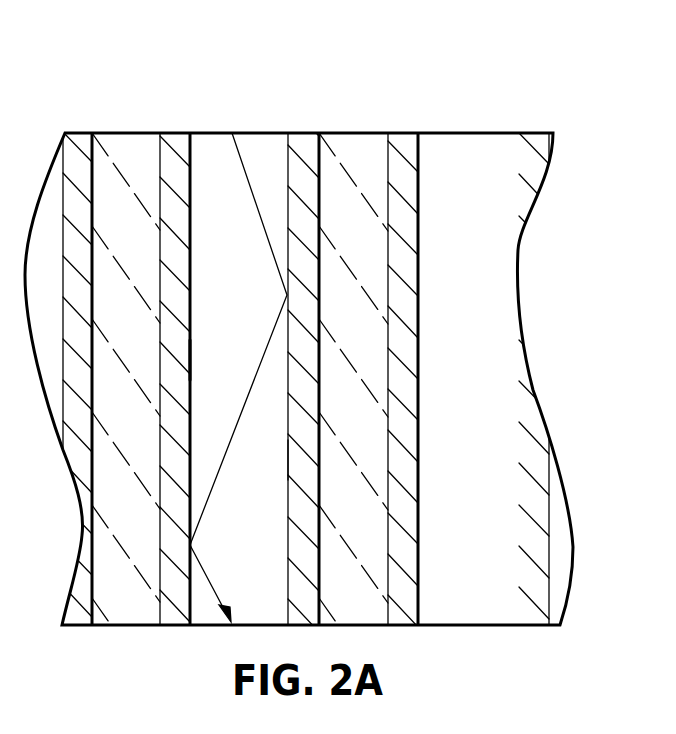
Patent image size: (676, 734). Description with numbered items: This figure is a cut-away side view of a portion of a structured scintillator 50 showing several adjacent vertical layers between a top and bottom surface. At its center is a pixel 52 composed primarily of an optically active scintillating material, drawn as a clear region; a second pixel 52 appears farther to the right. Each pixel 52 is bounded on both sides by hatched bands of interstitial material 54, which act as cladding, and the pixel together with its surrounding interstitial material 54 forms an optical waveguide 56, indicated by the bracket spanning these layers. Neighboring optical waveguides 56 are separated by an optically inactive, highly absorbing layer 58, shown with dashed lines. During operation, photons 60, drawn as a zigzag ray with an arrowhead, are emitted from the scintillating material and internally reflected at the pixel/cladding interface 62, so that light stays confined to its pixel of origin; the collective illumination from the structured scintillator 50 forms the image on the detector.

The structured scintillator 50 is at (440, 41).
The pixel 52 is at (257, 147).
The interstitial material 54 is at (175, 137).
The optical waveguide 56 is at (325, 83).
The optically inactive, highly absorbing layer 58 is at (365, 147).
The photons 60 is at (253, 197).
The pixel/cladding interface 62 is at (190, 367).